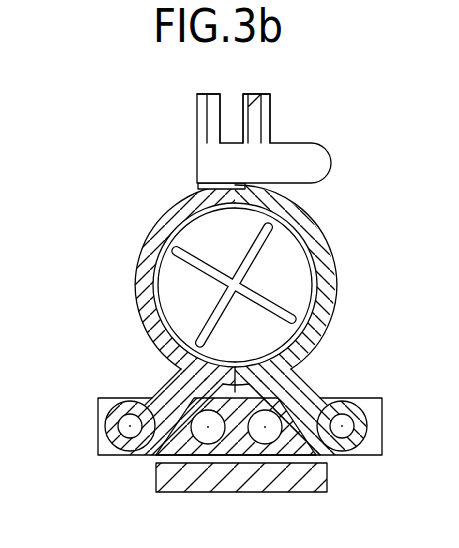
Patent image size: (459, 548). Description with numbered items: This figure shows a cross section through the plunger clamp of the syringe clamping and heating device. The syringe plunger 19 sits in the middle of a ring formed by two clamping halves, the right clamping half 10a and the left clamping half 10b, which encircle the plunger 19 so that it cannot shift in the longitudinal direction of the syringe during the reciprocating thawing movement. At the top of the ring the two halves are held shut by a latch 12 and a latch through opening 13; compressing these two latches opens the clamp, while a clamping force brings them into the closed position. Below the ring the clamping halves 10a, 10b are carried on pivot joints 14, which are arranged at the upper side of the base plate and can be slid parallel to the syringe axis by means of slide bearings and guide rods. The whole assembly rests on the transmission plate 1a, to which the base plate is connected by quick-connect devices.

The transmission plate 1a is at (318, 480).
The right clamping half 10a is at (317, 246).
The left clamping half 10b is at (160, 229).
The latch 12 is at (295, 158).
The latch through opening 13 is at (252, 127).
The pivot joints 14 is at (112, 434).
The syringe plunger 19 is at (208, 327).